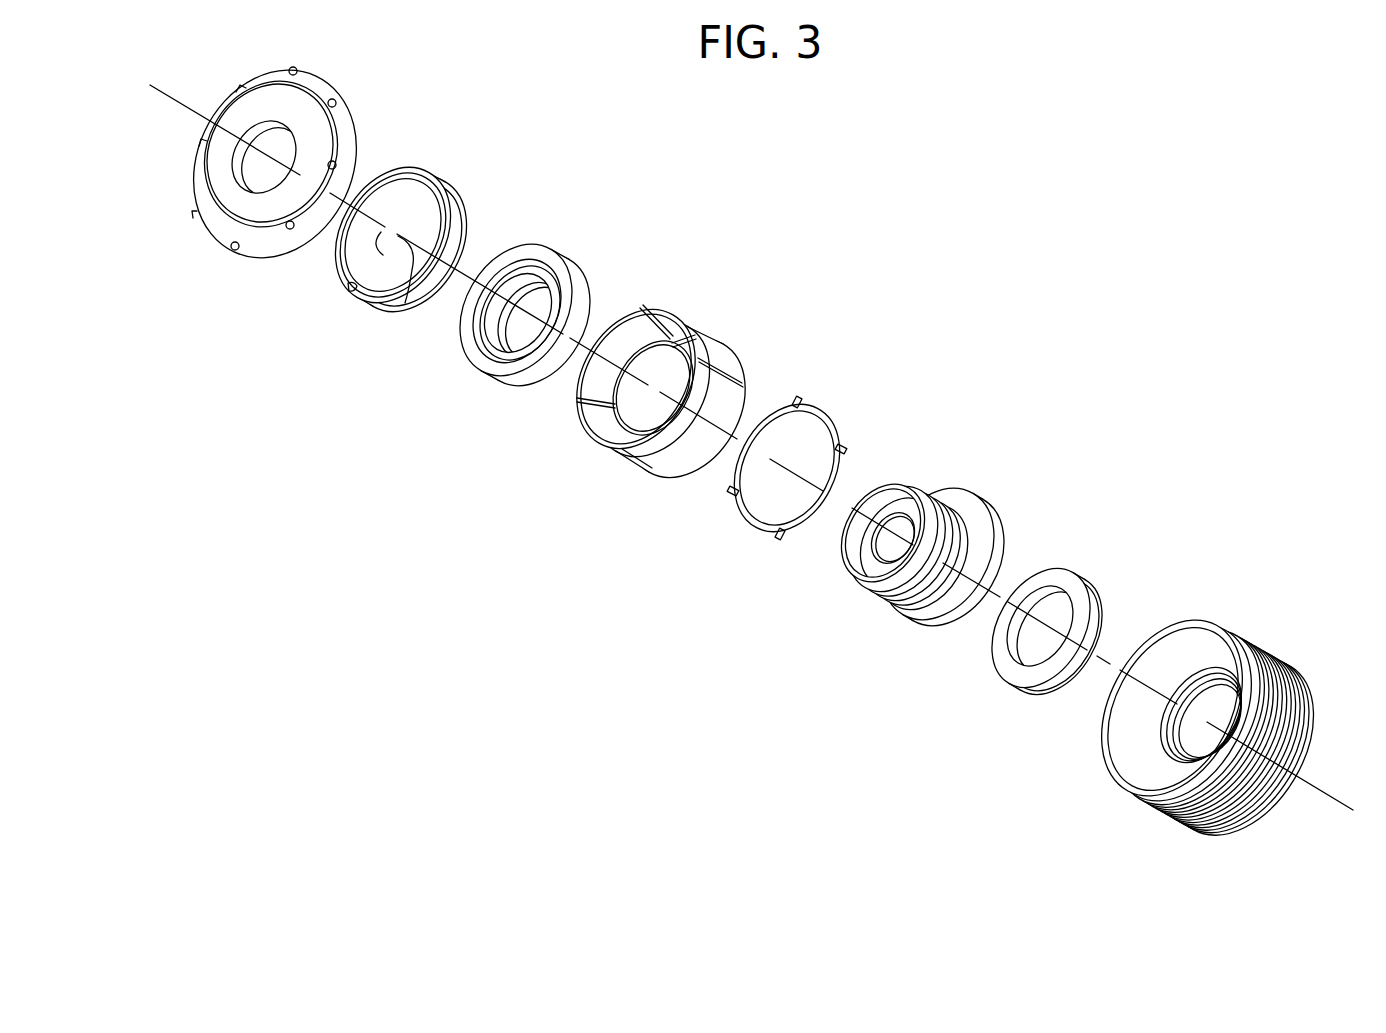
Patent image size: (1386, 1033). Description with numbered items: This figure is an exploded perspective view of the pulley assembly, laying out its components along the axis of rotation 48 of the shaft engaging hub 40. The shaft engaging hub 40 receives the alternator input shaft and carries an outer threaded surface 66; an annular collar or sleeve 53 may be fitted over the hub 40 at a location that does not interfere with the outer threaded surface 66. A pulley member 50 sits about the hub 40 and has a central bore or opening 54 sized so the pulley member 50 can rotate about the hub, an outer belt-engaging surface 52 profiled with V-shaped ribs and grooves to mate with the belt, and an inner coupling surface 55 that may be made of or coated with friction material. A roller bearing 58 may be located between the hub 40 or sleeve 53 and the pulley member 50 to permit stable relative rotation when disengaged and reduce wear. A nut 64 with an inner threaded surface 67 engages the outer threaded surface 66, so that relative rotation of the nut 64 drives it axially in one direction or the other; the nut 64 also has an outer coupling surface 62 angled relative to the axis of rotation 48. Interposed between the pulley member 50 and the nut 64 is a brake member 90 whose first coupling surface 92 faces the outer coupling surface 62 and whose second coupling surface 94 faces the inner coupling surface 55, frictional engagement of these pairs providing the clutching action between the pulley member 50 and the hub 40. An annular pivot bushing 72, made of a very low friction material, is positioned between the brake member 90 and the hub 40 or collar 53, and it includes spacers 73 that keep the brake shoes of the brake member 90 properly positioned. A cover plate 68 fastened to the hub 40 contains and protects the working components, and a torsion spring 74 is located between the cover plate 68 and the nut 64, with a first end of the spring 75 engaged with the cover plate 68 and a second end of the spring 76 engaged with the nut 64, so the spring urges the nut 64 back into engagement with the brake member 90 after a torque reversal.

The shaft engaging hub 40 is at (955, 610).
The axis of rotation 48 is at (926, 549).
The pulley member 50 is at (1204, 728).
The belt-engaging surface 52 is at (1192, 808).
The annular collar or sleeve 53 is at (963, 500).
The central bore or opening 54 is at (1114, 752).
The inner coupling surface 55 is at (1150, 766).
The roller bearing 58 is at (1080, 574).
The outer coupling surface 62 is at (516, 372).
The nut 64 is at (519, 320).
The outer threaded surface 66 is at (880, 586).
The inner threaded surface 67 is at (490, 330).
The cover plate 68 is at (347, 118).
The annular pivot bushing 72 is at (784, 485).
The spacers 73 is at (733, 488).
The torsion spring 74 is at (456, 194).
The first end of the spring 75 is at (352, 286).
The second end of the spring 76 is at (409, 262).
The brake member 90 is at (661, 400).
The first coupling surface 92 is at (623, 328).
The second coupling surface 94 is at (679, 475).